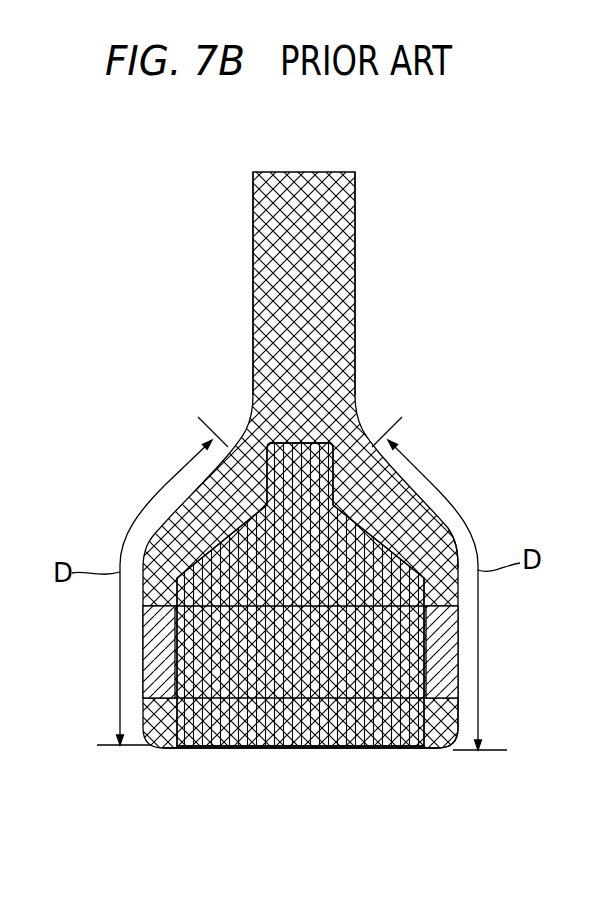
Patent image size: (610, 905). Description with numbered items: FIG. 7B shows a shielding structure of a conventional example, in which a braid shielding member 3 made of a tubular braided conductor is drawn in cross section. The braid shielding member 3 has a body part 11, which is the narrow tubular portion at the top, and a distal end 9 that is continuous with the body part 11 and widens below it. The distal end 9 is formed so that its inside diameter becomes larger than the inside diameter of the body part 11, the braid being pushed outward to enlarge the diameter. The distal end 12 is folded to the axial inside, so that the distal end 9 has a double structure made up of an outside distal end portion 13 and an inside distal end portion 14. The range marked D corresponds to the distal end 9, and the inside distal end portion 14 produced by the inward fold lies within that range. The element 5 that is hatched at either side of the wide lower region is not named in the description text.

The braid shielding member 3 is at (416, 318).
The core member 5 is at (460, 668).
The distal end 9 is at (469, 516).
The body part 11 is at (360, 378).
The distal end 12 is at (249, 372).
The outside distal end portion 13 is at (456, 712).
The inside distal end portion 14 is at (351, 750).